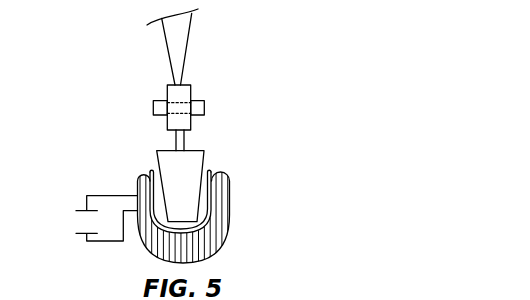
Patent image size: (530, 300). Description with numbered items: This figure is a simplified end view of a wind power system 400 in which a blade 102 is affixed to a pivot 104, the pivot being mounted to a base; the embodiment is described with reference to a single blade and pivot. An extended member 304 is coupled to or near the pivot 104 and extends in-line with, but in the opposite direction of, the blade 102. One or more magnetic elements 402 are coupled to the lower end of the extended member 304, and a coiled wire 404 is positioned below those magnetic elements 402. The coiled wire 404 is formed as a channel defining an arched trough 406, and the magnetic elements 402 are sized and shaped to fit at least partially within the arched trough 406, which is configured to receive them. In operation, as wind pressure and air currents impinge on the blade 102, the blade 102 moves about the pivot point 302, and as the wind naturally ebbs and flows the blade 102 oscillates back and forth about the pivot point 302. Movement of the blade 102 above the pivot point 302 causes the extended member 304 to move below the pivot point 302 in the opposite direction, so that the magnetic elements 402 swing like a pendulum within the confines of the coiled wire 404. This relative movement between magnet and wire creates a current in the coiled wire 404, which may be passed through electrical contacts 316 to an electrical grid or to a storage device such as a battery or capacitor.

The blade 102 is at (190, 43).
The pivot 104 is at (167, 88).
The pivot point 302 is at (204, 107).
The extended member 304 is at (176, 138).
The magnetic elements 402 is at (203, 165).
The coiled wire 404 is at (232, 181).
The arched trough 406 is at (149, 173).
The electrical contacts 316 is at (87, 241).
The wind power system 400 is at (363, 142).